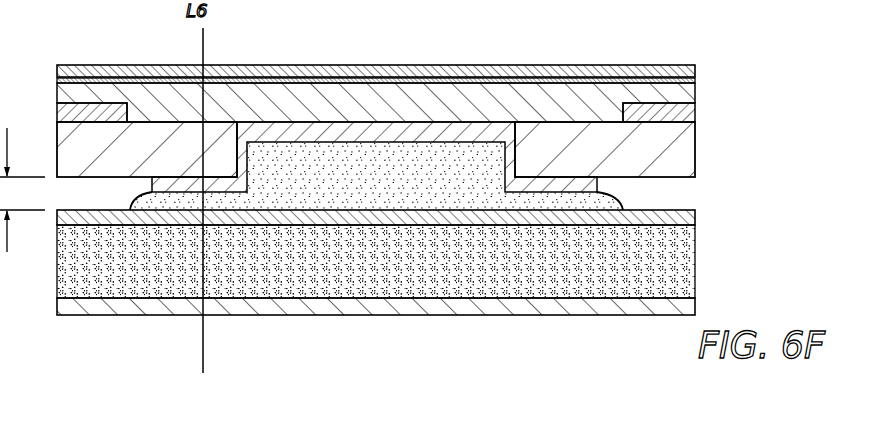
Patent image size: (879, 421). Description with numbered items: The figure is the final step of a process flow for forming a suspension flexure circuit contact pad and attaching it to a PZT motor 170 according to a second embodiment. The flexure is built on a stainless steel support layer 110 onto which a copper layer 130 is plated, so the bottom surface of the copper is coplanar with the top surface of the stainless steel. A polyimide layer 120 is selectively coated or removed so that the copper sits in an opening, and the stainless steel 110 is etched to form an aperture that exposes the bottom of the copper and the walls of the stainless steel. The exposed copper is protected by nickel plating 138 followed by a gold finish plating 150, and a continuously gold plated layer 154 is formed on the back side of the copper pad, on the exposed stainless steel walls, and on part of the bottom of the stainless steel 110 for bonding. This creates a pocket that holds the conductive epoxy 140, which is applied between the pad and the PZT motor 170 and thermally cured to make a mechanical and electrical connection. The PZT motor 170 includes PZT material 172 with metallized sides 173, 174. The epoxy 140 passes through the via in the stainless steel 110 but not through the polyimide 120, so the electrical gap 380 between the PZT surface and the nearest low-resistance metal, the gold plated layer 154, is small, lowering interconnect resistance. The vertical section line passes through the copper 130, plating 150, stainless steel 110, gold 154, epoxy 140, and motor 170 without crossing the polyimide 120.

The stainless steel support layer 110 is at (697, 150).
The polyimide layer 120 is at (697, 117).
The copper layer 130 is at (697, 98).
The nickel plating 138 is at (697, 79).
The conductive epoxy 140 is at (327, 175).
The gold plating layer 150 is at (649, 65).
The gold plated layer 154 is at (400, 133).
The PZT motor 170 is at (403, 279).
The PZT material 172 is at (72, 277).
The substrate top layer 173 is at (58, 219).
The metallized first side 174 is at (68, 316).
The electrical gap 380 is at (8, 139).